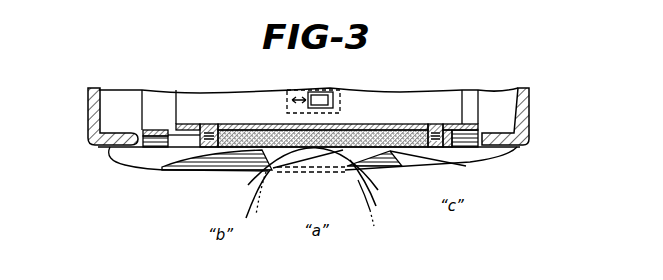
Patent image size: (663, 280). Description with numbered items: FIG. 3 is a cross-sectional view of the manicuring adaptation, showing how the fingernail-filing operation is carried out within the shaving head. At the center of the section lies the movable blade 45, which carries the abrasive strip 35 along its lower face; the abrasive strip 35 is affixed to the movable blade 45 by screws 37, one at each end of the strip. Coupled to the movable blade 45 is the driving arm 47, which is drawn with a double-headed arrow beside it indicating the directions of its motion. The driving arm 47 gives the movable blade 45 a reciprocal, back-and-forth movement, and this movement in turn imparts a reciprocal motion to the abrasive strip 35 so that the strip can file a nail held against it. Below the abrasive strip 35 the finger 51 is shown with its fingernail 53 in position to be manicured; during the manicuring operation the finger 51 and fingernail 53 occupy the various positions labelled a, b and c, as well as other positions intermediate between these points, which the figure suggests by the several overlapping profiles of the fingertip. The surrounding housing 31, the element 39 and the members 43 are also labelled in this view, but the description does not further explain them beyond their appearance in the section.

The housing 31 is at (528, 102).
The abrasive strip 35 is at (387, 114).
The screws 37 is at (212, 127).
The mounting plate 39 is at (345, 128).
The lens holders 43 is at (211, 166).
The movable blade 45 is at (199, 108).
The driving arm 47 is at (319, 96).
The finger 51 is at (376, 206).
The fingernail 53 is at (321, 201).